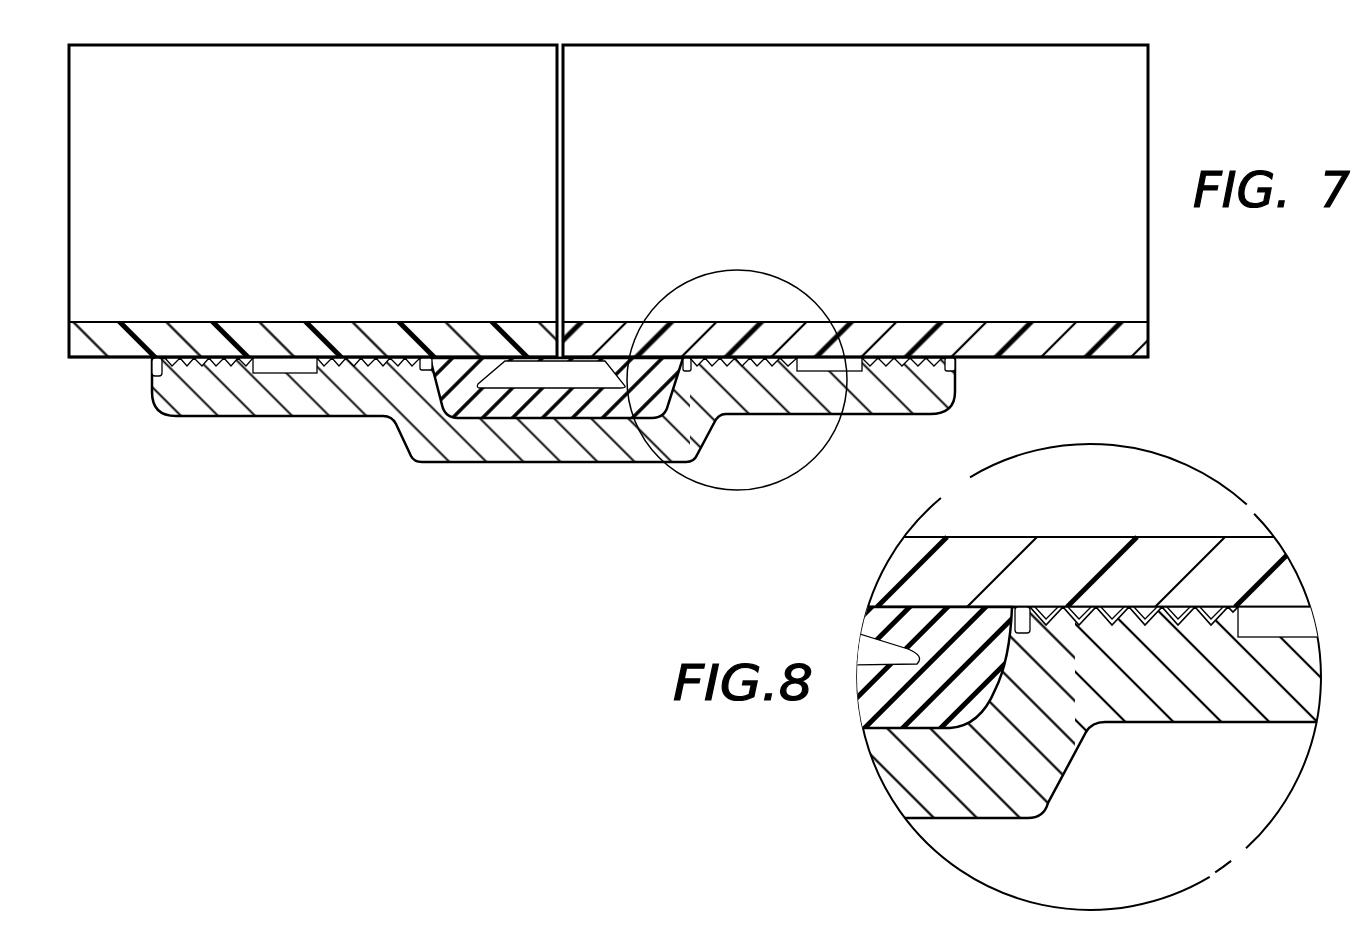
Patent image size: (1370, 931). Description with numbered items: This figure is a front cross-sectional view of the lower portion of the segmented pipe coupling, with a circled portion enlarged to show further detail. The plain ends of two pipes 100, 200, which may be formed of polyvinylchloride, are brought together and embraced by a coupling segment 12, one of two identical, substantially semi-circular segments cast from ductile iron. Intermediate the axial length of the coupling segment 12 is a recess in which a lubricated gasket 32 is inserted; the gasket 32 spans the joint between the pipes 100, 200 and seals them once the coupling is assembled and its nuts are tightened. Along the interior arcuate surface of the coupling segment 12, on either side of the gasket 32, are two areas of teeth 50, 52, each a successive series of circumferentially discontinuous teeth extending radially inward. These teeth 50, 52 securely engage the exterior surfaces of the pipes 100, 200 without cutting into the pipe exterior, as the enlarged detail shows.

In FIG. 7, the coupling segment 12 is at (478, 450).
In FIG. 8, the coupling segment 12 is at (1158, 707).
In FIG. 7, the lubricated gasket 32 is at (575, 408).
In FIG. 8, the lubricated gasket 32 is at (931, 667).
In FIG. 7, the area of teeth 50 is at (390, 356).
In FIG. 7, the area of teeth 52 is at (248, 356).
In FIG. 8, the area of teeth 52 is at (1057, 607).
In FIG. 7, the pipe 100 is at (104, 347).
In FIG. 7, the pipe 200 is at (1106, 358).
In FIG. 8, the pipe 200 is at (1158, 552).